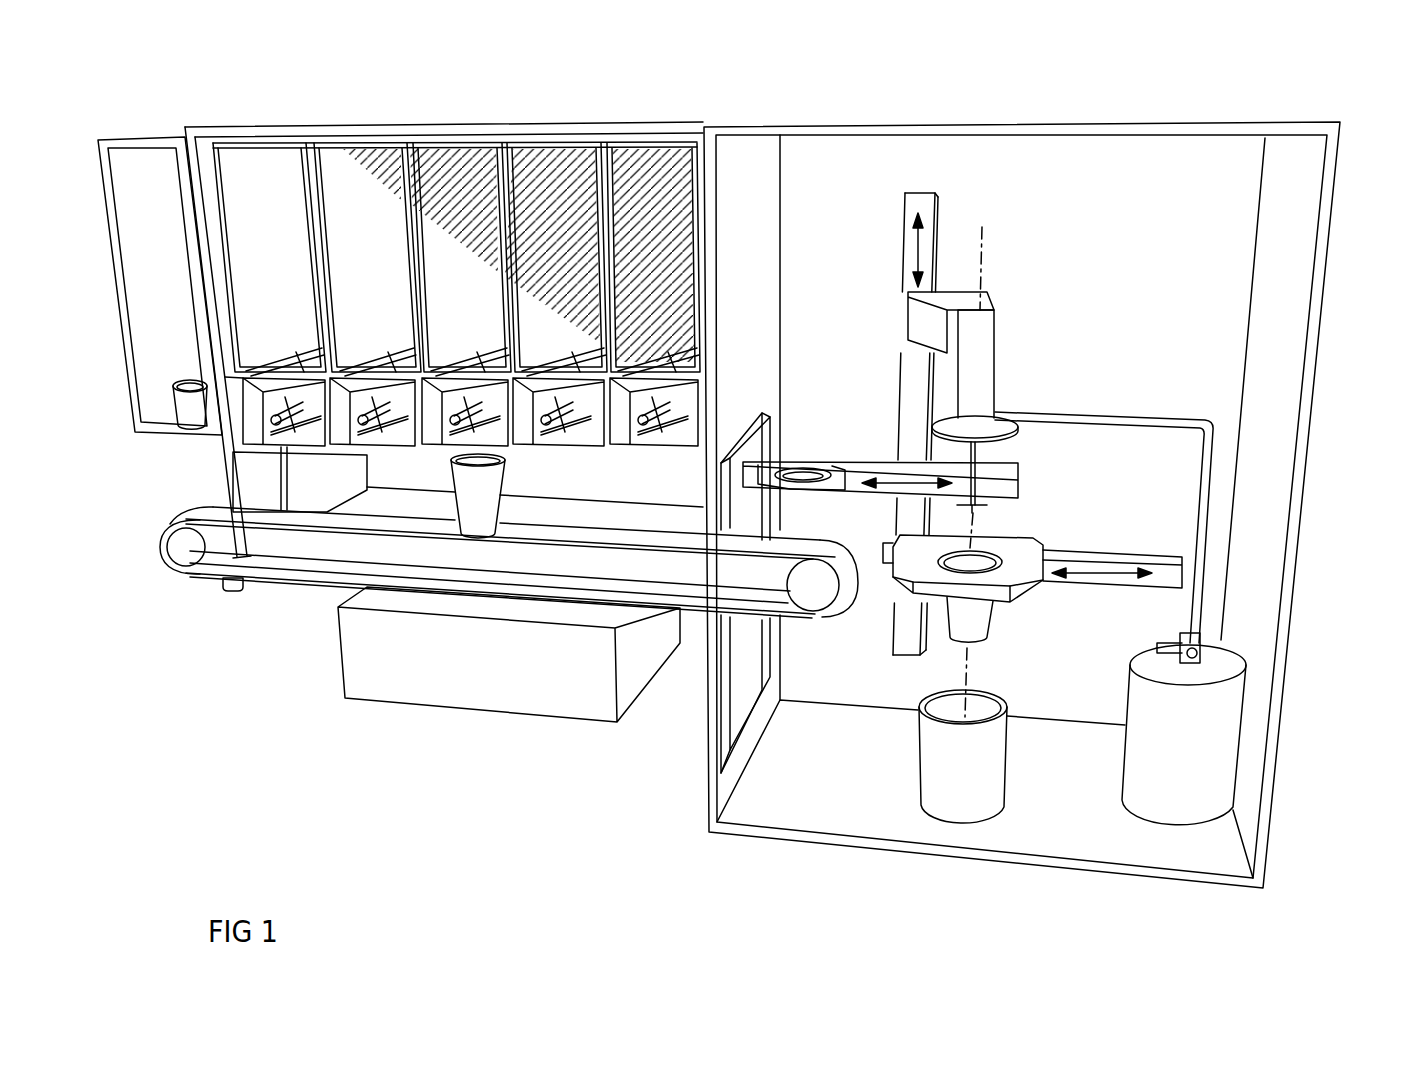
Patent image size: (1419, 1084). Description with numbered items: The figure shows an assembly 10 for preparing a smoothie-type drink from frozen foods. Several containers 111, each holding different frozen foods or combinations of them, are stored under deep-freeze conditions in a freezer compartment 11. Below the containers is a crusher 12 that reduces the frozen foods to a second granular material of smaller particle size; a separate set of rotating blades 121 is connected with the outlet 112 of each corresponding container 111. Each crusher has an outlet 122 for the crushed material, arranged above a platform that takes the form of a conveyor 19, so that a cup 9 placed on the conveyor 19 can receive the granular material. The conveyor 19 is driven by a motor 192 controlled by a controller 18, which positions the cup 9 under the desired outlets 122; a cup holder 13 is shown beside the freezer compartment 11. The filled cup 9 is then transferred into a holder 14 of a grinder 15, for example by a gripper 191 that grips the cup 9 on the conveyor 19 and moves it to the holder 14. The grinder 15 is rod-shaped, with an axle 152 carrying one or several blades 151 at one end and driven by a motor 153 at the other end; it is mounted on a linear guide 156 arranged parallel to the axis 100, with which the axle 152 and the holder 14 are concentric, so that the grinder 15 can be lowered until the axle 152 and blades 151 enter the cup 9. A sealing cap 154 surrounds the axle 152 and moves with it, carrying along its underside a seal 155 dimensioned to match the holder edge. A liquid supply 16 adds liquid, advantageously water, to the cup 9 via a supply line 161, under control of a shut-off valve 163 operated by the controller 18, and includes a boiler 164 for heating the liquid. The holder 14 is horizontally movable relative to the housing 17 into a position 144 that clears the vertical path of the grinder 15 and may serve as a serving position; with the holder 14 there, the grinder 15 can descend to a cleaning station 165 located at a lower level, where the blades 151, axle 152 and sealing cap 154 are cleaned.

The cup 9 is at (452, 512).
The assembly 10 is at (240, 770).
The freezer compartment 11 is at (407, 123).
The crusher 12 is at (215, 425).
The cup holder 13 is at (123, 340).
The holder 14 is at (890, 578).
The grinder 15 is at (1057, 278).
The liquid supply 16 is at (1138, 390).
The housing 17 is at (1297, 566).
The controller 18 is at (400, 705).
The conveyor 19 is at (330, 528).
The axis 100 is at (983, 252).
The containers 111 is at (263, 178).
The outlet 112 is at (289, 360).
The rotating blades 121 is at (650, 452).
The outlet 122 is at (538, 450).
The position 144 is at (1085, 527).
The blades 151 is at (985, 511).
The axle 152 is at (985, 457).
The motor 153 is at (998, 340).
The sealing cap 154 is at (930, 380).
The seal 155 is at (982, 436).
The linear guide 156 is at (903, 222).
The supply line 161 is at (1047, 411).
The shut-off valve 163 is at (1183, 643).
The boiler 164 is at (1130, 710).
The cleaning station 165 is at (915, 773).
The gripper 191 is at (820, 487).
The motor 192 is at (233, 593).